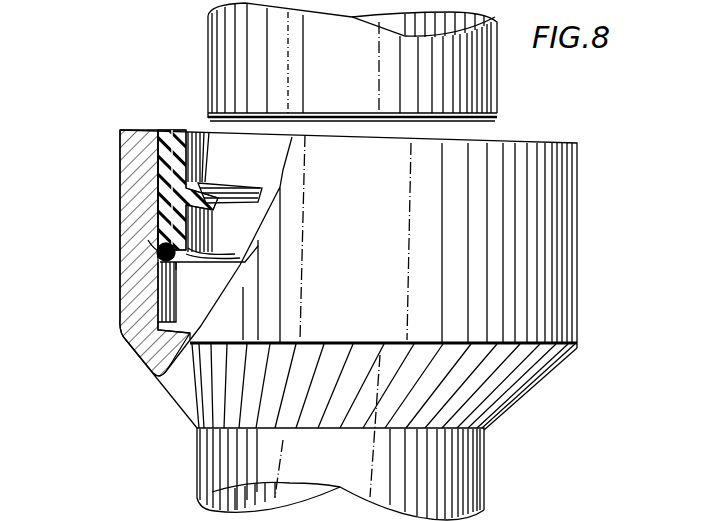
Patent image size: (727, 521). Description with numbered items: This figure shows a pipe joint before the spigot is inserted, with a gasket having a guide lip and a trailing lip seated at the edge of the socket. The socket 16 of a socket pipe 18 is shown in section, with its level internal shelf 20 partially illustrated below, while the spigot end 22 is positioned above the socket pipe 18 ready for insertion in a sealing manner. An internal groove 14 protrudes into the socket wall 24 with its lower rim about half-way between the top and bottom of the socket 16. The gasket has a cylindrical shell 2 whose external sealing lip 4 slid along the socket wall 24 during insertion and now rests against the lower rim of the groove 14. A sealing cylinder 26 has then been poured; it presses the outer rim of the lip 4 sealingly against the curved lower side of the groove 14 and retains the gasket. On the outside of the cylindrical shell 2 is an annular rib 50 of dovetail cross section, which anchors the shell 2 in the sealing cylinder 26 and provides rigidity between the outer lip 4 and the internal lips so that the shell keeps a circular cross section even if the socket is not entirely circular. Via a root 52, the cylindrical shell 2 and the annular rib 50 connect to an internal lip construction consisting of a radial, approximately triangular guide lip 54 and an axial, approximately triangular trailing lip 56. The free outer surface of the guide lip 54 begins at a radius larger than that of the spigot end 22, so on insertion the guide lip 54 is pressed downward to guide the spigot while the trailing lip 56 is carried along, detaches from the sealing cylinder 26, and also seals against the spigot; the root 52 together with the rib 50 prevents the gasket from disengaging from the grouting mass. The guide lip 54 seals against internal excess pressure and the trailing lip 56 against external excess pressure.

The cylindrical shell 2 is at (196, 233).
The external sealing lip 4 is at (176, 268).
The internal groove 14 is at (148, 246).
The socket 16 is at (120, 280).
The socket pipe 18 is at (218, 445).
The internal shelf 20 is at (207, 325).
The spigot end 22 is at (230, 51).
The socket wall 24 is at (170, 302).
The sealing cylinder 26 is at (178, 130).
The annular rib 50 is at (174, 196).
The root 52 is at (196, 210).
The guide lip 54 is at (243, 193).
The trailing lip 56 is at (200, 143).